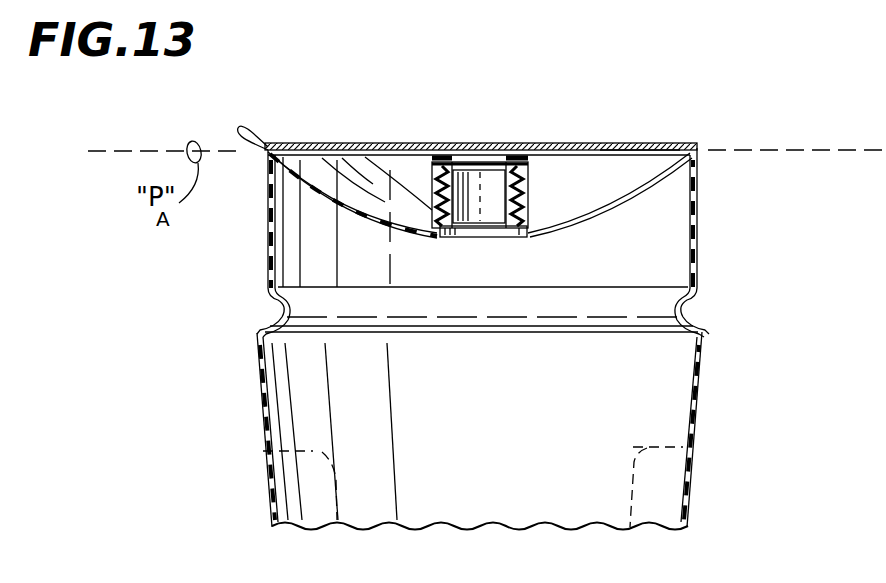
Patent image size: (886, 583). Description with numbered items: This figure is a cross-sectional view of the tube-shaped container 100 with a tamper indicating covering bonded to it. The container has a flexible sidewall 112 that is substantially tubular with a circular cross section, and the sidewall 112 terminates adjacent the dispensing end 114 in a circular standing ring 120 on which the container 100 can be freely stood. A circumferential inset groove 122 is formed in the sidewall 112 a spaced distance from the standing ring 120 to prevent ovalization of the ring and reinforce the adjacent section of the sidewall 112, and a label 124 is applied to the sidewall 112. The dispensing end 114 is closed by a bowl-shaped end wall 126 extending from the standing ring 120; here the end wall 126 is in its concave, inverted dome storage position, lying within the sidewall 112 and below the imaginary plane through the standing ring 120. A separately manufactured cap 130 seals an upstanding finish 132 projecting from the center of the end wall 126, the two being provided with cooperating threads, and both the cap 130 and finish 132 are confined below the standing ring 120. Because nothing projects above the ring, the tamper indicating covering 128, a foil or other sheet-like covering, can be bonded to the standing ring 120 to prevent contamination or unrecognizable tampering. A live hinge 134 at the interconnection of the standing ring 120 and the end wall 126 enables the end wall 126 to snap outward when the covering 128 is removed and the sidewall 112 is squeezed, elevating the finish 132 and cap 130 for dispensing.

The tube-shaped container 100 is at (564, 421).
The flexible sidewall 112 is at (693, 372).
The dispensing end 114 is at (315, 162).
The standing ring 120 is at (697, 145).
The circumferential inset groove 122 is at (678, 317).
The label 124 is at (667, 488).
The bowl-shaped end wall 126 is at (585, 207).
The tamper indicating covering 128 is at (617, 143).
The closure, or cap 130 is at (488, 166).
The upstanding finish 132 is at (495, 236).
The live hinge 134 is at (268, 140).